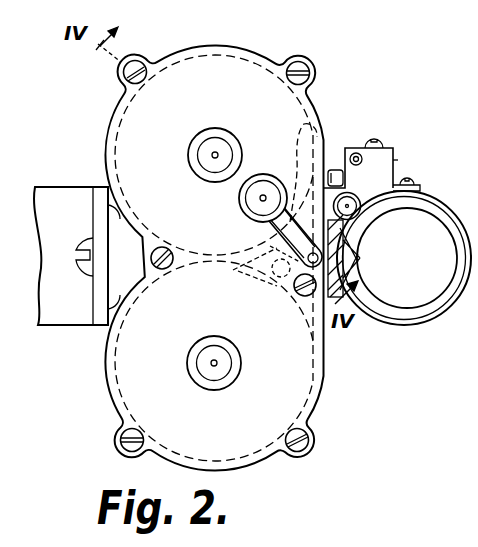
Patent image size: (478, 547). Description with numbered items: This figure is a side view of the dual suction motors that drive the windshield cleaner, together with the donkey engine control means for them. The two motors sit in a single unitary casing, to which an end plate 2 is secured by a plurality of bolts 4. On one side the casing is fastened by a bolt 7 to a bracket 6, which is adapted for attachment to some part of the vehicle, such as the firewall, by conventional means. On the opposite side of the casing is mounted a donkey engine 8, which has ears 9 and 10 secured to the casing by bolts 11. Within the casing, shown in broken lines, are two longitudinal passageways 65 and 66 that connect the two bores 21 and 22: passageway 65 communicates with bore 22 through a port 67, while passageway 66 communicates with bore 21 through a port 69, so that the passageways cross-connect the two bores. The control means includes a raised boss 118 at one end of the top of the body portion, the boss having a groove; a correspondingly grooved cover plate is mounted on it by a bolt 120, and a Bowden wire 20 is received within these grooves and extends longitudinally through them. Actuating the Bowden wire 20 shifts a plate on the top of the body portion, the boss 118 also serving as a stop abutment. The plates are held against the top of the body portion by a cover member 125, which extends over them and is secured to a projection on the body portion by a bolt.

The ear 10 is at (214, 235).
The end plate 2 is at (138, 108).
The bolts 4 is at (310, 77).
The bracket 6 is at (68, 197).
The bolt 7 is at (83, 271).
The bore 21 is at (313, 124).
The bore 22 is at (308, 380).
The port 69 is at (302, 173).
The passageway 65 is at (276, 233).
The port 67 is at (236, 270).
The passageway 66 is at (280, 284).
The Bowden wire 20 is at (361, 162).
The bolt 120 is at (371, 141).
The raised boss 118 is at (395, 163).
The cover member 125 is at (427, 186).
The ear 9 is at (338, 239).
The bolts 11 is at (350, 259).
The donkey engine 8 is at (431, 322).